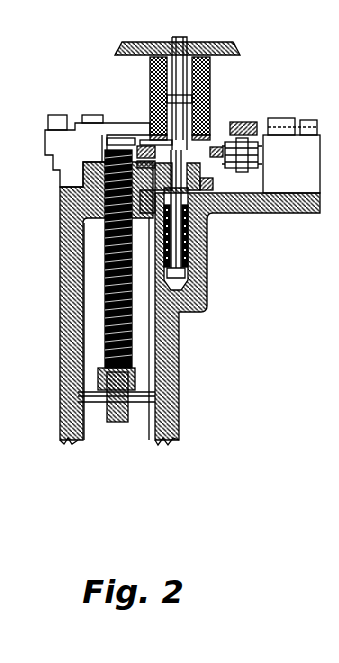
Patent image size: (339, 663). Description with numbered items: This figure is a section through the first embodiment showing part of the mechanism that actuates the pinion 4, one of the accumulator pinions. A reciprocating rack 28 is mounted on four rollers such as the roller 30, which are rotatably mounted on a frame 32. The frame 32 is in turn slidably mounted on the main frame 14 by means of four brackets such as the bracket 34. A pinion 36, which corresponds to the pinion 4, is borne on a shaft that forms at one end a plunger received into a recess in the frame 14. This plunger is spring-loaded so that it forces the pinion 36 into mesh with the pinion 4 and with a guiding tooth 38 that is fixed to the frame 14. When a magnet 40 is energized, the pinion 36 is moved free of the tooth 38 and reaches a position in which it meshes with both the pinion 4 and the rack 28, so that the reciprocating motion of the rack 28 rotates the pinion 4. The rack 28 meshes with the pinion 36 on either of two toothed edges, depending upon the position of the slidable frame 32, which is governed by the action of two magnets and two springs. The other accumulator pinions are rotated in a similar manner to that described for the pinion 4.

The frame 14 is at (212, 44).
The pinion 4 is at (95, 161).
The magnet 40 is at (211, 75).
The reciprocating rack 28 is at (213, 145).
The frame 32 is at (252, 127).
The bracket 34 is at (282, 121).
The roller 30 is at (260, 156).
The pinion 36 is at (197, 173).
The guiding tooth 38 is at (214, 184).